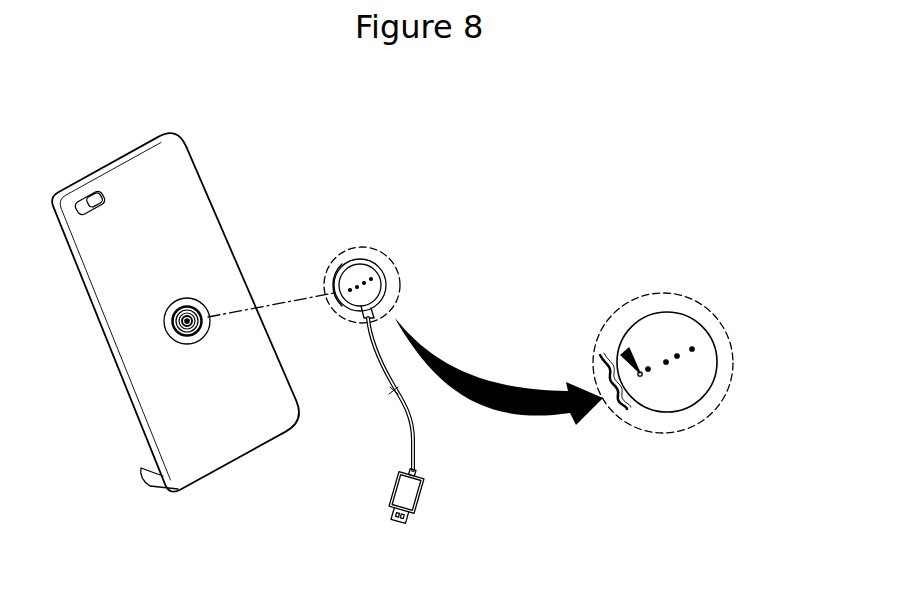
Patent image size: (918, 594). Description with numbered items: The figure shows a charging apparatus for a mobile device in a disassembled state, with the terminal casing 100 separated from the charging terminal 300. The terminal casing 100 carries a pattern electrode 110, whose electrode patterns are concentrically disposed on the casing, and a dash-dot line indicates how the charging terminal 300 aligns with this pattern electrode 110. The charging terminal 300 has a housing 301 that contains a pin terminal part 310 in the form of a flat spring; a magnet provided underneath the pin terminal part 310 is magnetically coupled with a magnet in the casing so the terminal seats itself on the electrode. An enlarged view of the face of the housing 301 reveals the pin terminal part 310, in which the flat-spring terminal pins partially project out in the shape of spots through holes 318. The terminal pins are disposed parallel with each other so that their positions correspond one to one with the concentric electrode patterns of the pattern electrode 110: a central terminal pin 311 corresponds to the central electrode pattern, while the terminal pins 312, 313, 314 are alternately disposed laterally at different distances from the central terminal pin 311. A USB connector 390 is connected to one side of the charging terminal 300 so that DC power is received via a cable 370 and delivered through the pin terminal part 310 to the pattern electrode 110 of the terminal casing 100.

The terminal casing 100 is at (226, 183).
The pattern electrode 110 is at (155, 344).
The charging terminal 300 is at (458, 299).
The housing 301 is at (350, 262).
The pin terminal part 310 is at (732, 381).
The central terminal pin 311 is at (665, 360).
The terminal pin 312 is at (677, 354).
The terminal pin 313 is at (648, 368).
The terminal pin 314 is at (692, 348).
The holes 318 is at (622, 354).
The cable 370 is at (407, 432).
The USB connector 390 is at (408, 497).